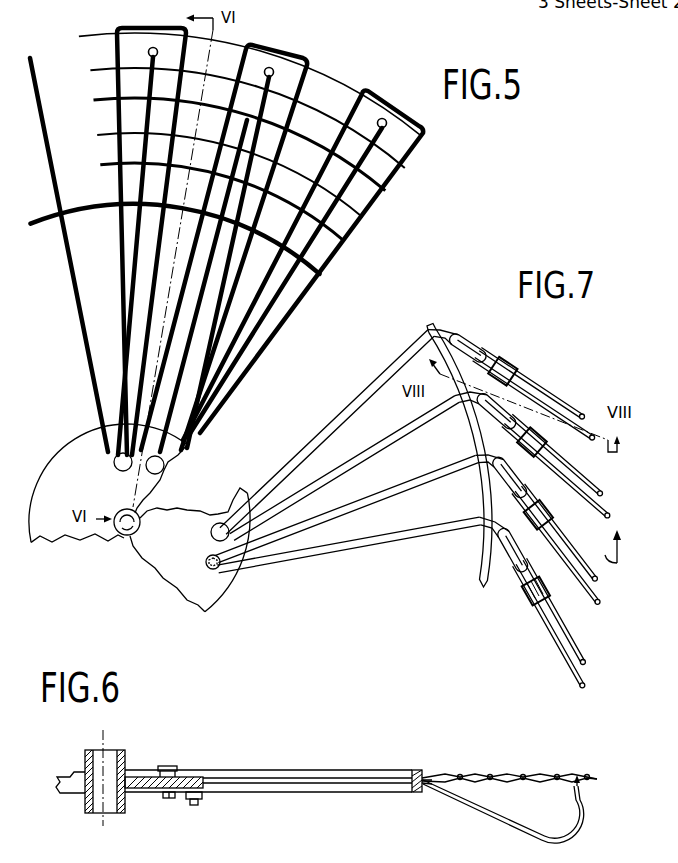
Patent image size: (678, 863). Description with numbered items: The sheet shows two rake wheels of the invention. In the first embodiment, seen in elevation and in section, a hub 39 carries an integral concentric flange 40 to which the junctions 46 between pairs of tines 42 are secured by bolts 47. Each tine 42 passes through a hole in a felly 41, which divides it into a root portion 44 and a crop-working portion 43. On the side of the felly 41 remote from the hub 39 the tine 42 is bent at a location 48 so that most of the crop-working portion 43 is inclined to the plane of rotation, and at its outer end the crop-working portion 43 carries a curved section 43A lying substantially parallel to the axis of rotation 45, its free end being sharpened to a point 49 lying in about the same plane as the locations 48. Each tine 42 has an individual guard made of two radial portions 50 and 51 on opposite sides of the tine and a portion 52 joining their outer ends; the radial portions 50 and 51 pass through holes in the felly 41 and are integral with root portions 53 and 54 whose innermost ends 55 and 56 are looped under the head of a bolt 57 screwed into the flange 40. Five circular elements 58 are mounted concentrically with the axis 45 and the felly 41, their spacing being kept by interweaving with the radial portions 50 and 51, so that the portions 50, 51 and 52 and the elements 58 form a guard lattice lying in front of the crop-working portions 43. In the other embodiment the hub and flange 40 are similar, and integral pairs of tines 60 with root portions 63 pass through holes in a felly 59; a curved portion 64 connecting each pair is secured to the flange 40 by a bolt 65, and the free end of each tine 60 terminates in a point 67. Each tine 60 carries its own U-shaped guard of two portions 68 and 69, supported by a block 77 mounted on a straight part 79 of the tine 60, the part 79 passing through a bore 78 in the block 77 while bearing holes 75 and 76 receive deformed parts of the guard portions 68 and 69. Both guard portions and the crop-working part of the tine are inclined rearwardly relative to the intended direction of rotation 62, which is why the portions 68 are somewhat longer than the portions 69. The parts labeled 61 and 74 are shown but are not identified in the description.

In FIG. 5, the hub 39 is at (124, 508).
In FIG. 6, the hub 39 is at (125, 750).
In FIG. 5, the flange 40 is at (74, 453).
In FIG. 6, the flange 40 is at (62, 796).
In FIG. 5, the felly 41 is at (72, 213).
In FIG. 6, the felly 41 is at (416, 769).
In FIG. 5, the tine 42 is at (252, 99).
In FIG. 6, the tine 42 is at (517, 812).
In FIG. 5, the crop-working portion 43 is at (274, 70).
In FIG. 6, the crop-working portion 43 is at (517, 809).
In FIG. 6, the section 43A is at (517, 809).
In FIG. 5, the root portion 44 is at (222, 298).
In FIG. 6, the root portion 44 is at (279, 770).
In FIG. 5, the axis of rotation 45 is at (120, 534).
In FIG. 6, the axis of rotation 45 is at (103, 812).
In FIG. 6, the junction 46 is at (160, 766).
In FIG. 5, the bolt 47 is at (114, 468).
In FIG. 6, the bolt 47 is at (170, 766).
In FIG. 5, the location 48 is at (230, 217).
In FIG. 6, the location 48 is at (438, 790).
In FIG. 6, the point 49 is at (574, 790).
In FIG. 5, the radial portion 50 is at (166, 135).
In FIG. 6, the radial portion 50 is at (516, 777).
In FIG. 5, the radial portion 51 is at (140, 229).
In FIG. 6, the radial portion 51 is at (516, 765).
In FIG. 5, the connecting portion 52 is at (160, 27).
In FIG. 6, the connecting portion 52 is at (597, 777).
In FIG. 5, the root portion 53 is at (158, 268).
In FIG. 5, the root portion 54 is at (122, 306).
In FIG. 6, the innermost end 55 is at (168, 799).
In FIG. 6, the innermost end 56 is at (204, 800).
In FIG. 6, the bolt 57 is at (193, 806).
In FIG. 5, the circular element 58 is at (94, 100).
In FIG. 6, the circular element 58 is at (516, 767).
In FIG. 7, the felly 59 is at (427, 331).
In FIG. 7, the tine 60 is at (546, 608).
In FIG. 7, the support bar 61 is at (447, 338).
In FIG. 7, the intended direction of rotation 62 is at (607, 546).
In FIG. 7, the root portion 63 is at (350, 510).
In FIG. 5, the curved portion 64 is at (208, 563).
In FIG. 5, the bolt 65 is at (214, 570).
In FIG. 7, the point 67 is at (563, 628).
In FIG. 7, the guard portion 68 is at (568, 678).
In FIG. 7, the guard portion 69 is at (563, 628).
In FIG. 7, the clamp 74 is at (519, 560).
In FIG. 7, the bearing hole 75 is at (520, 592).
In FIG. 7, the bearing hole 76 is at (530, 589).
In FIG. 7, the block 77 is at (512, 366).
In FIG. 7, the bore 78 is at (522, 585).
In FIG. 7, the straight part 79 is at (527, 497).